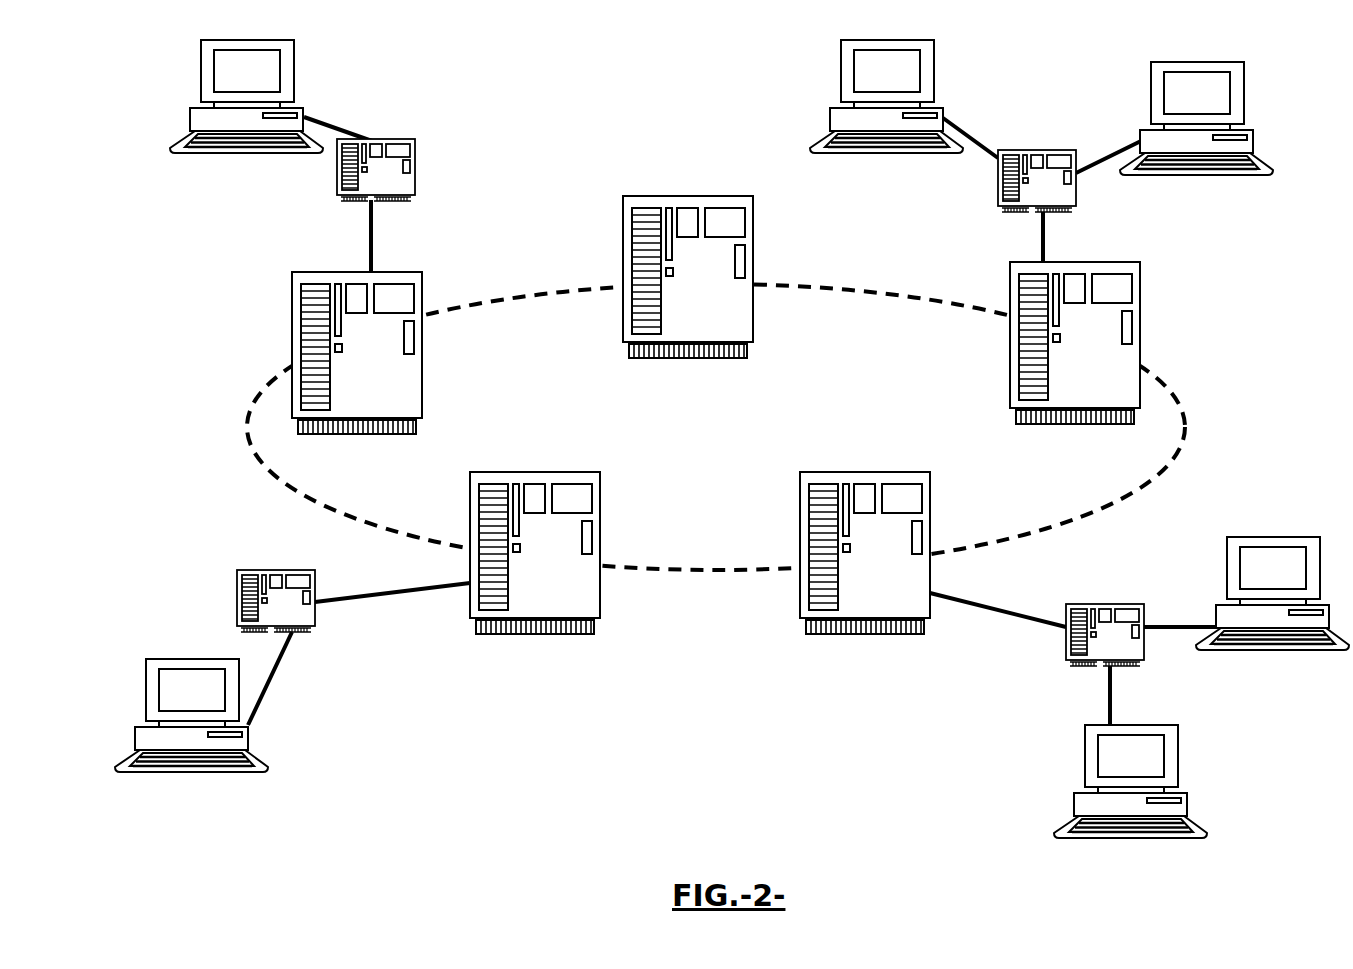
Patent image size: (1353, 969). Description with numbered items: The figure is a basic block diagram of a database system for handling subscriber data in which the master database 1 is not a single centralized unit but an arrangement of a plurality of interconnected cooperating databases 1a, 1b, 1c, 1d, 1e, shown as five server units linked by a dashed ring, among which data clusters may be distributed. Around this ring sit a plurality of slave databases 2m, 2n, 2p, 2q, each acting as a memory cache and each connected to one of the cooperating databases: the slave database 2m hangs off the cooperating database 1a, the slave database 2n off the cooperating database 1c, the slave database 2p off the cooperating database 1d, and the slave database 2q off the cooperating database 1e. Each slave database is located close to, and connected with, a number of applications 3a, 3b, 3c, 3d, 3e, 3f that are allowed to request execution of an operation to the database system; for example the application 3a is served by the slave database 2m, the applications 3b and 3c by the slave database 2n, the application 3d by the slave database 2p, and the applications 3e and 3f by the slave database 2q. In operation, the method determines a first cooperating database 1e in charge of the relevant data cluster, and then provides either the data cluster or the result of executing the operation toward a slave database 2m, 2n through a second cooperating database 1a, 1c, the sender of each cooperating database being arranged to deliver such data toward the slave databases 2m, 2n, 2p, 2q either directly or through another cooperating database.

The master database 1 is at (724, 548).
The cooperating database 1a is at (395, 416).
The cooperating database 1b is at (725, 340).
The cooperating database 1c is at (1090, 406).
The cooperating database 1d is at (550, 616).
The first cooperating database 1e is at (880, 616).
The slave database 2m is at (392, 172).
The slave database 2n is at (1054, 183).
The slave database 2p is at (292, 603).
The slave database 2q is at (1120, 637).
The application 3a is at (234, 130).
The application 3b is at (884, 130).
The application 3c is at (1227, 151).
The application 3d is at (189, 750).
The application 3e is at (1137, 815).
The application 3f is at (1282, 628).